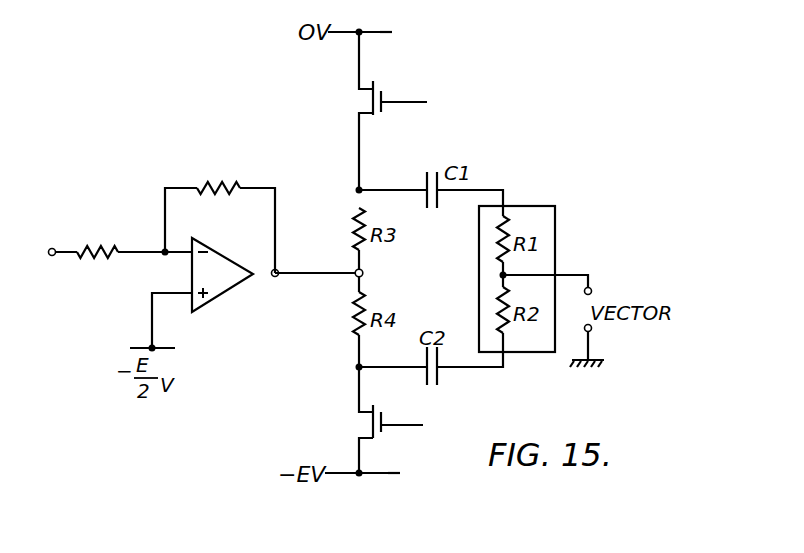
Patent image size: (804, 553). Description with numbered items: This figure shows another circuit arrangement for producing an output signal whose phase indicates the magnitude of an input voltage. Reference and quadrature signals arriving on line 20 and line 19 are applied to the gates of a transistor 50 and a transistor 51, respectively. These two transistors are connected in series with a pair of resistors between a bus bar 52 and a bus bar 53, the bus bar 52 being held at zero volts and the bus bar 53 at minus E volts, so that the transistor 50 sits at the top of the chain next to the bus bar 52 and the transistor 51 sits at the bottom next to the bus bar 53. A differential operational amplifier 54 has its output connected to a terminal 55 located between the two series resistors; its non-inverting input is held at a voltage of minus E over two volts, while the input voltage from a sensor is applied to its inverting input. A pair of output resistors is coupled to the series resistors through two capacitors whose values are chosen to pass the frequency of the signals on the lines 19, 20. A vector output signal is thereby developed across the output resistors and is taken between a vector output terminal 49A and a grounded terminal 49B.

The bus bar 52 is at (393, 32).
The transistor 50 is at (377, 85).
The line 20 is at (403, 104).
The terminal 55 is at (356, 270).
The differential operational amplifier 54 is at (235, 262).
The vector output terminal 49A is at (592, 289).
The ground terminal 49B is at (593, 331).
The line 19 is at (393, 425).
The transistor 51 is at (375, 440).
The bus bar 53 is at (392, 473).